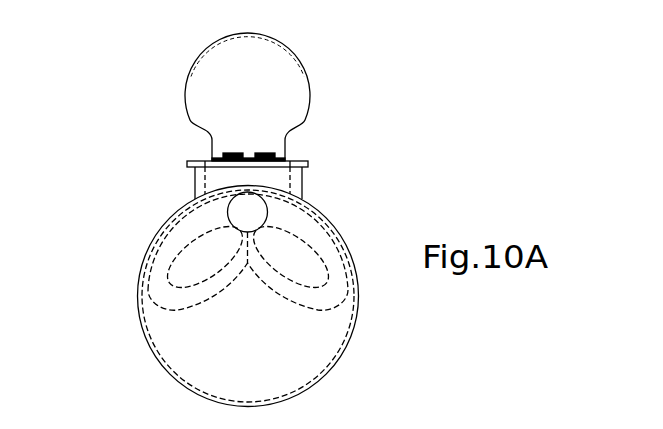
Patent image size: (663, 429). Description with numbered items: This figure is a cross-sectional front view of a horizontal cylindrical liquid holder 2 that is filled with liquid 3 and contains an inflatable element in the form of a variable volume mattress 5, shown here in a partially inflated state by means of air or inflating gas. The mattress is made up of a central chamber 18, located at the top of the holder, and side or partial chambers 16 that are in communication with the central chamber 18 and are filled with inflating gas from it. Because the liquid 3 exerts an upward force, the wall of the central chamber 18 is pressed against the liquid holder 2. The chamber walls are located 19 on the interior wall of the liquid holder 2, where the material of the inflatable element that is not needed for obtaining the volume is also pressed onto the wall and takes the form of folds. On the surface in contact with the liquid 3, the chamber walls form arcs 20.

The liquid holder 2 is at (342, 348).
The liquid 3 is at (252, 360).
The variable volume mattress 5 is at (178, 228).
The partial chambers 16 is at (295, 255).
The central chamber 18 is at (248, 212).
The chamber walls located on interior wall 19 is at (348, 275).
The arcs 20 is at (178, 312).